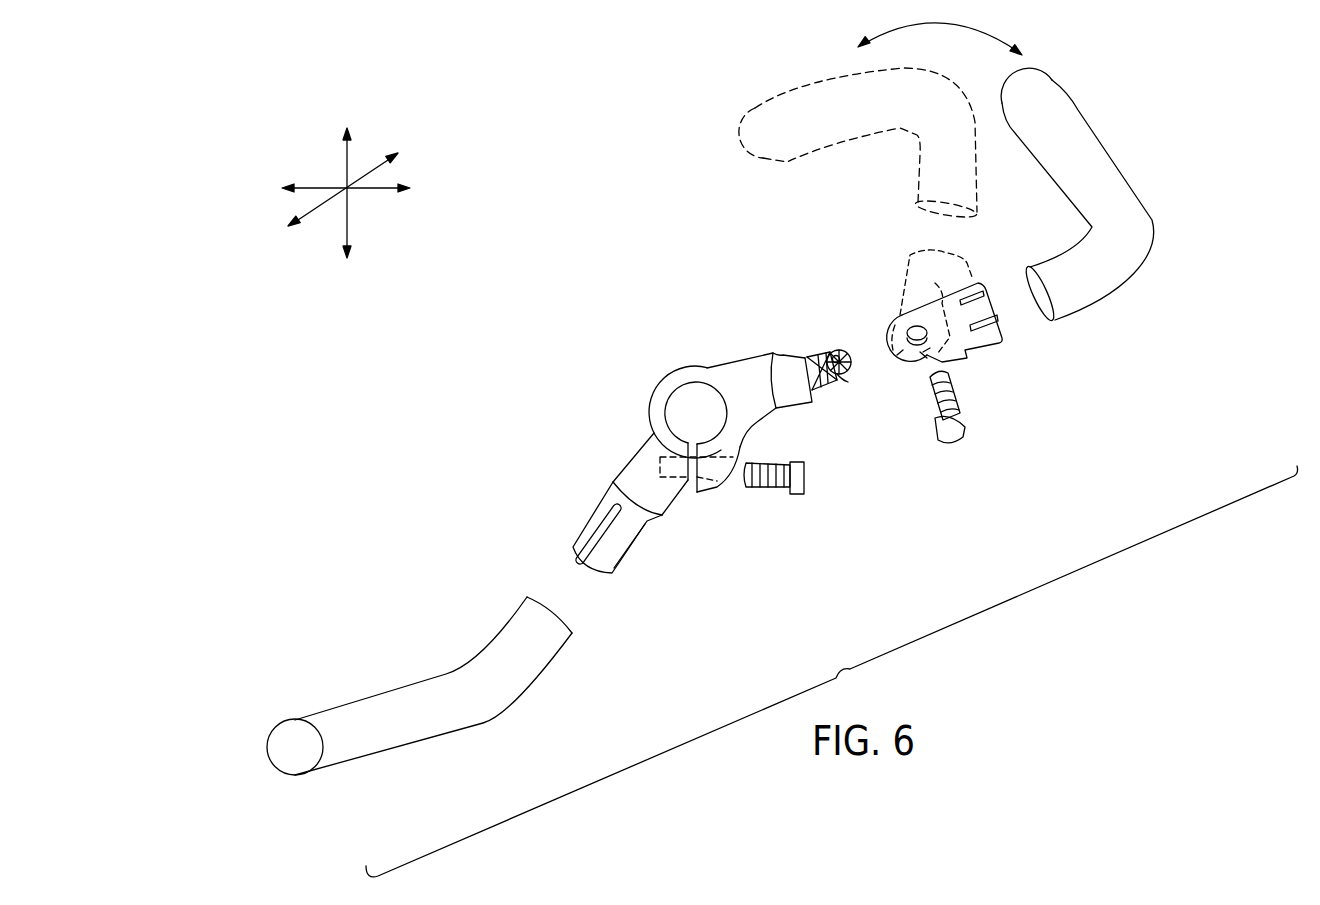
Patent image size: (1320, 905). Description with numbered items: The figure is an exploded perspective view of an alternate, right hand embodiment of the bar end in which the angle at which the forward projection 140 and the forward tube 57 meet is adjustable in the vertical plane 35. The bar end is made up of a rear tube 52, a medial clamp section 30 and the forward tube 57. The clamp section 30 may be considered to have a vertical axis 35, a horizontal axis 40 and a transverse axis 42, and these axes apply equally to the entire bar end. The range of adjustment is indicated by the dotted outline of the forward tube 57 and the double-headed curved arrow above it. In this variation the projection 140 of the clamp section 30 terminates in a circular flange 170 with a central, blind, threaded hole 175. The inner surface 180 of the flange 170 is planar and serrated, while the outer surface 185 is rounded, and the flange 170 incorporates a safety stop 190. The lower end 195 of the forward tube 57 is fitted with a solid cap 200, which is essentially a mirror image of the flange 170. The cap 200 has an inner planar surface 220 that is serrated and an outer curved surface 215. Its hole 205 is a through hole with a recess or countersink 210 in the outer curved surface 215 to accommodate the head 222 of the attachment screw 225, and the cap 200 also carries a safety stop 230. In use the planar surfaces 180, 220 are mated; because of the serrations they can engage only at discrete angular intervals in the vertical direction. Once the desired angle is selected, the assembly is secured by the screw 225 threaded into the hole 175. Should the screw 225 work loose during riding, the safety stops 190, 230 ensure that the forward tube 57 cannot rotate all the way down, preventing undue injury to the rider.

The medial clamp section 30 is at (655, 336).
The vertical axis 35 is at (345, 150).
The horizontal axis 40 is at (313, 210).
The transverse axis 42 is at (383, 187).
The rear tube 52 is at (510, 720).
The forward tube 57 is at (1233, 117).
The forward projection 140 is at (797, 427).
The circular flange 170 is at (842, 350).
The central blind threaded hole 175 is at (826, 355).
The inner surface of the flange 180 is at (834, 352).
The outer surface of the flange 185 is at (800, 350).
The safety stop 190 is at (840, 377).
The lower end of the forward tube 195 is at (1085, 301).
The solid cap 200 is at (1023, 347).
The through hole 205 is at (923, 327).
The recess or countersink 210 is at (912, 327).
The outer curved surface 215 is at (923, 360).
The inner planar surface 220 is at (903, 350).
The head of the attachment screw 222 is at (962, 430).
The attachment screw 225 is at (947, 395).
The safety stop 230 is at (923, 357).